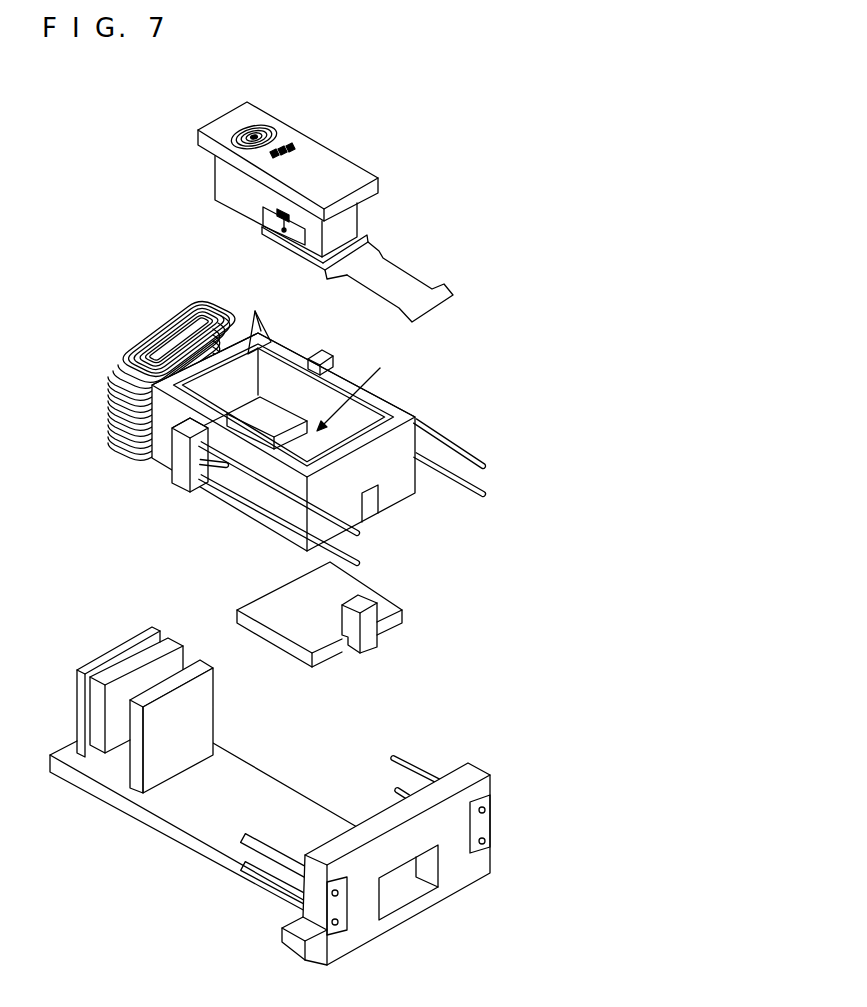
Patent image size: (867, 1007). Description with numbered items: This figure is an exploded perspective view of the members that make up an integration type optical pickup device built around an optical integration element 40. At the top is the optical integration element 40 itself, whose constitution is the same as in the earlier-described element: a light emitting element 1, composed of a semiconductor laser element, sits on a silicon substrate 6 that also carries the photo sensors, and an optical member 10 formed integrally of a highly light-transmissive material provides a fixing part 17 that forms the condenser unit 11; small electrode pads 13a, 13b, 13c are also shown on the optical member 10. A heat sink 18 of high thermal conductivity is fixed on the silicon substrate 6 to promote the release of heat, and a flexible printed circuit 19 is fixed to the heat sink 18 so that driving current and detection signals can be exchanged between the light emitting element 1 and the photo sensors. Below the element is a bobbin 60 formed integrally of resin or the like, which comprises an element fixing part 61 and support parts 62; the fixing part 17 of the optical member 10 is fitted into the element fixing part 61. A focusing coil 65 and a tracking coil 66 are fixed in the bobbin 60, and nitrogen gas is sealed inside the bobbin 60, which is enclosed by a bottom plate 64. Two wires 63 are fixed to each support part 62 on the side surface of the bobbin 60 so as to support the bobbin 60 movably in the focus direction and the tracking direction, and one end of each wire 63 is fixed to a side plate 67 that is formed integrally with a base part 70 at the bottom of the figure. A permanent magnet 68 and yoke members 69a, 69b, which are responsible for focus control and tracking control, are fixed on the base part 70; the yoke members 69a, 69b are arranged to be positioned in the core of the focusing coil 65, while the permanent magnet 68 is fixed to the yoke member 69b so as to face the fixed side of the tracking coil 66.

The light emitting element 1 is at (277, 218).
The silicon substrate 6 is at (282, 233).
The optical member 10 is at (212, 223).
The condenser unit 11 is at (258, 123).
The electrode pad 13a is at (283, 148).
The electrode pad 13b is at (282, 150).
The electrode pad 13c is at (290, 147).
The fixing part 17 is at (202, 141).
The heat sink 18 is at (291, 262).
The flexible printed circuit 19 is at (395, 282).
The optical integration element 40 is at (425, 220).
The bobbin 60 is at (407, 491).
The element fixing part 61 is at (257, 320).
The support part 62 is at (325, 352).
The wires 63 is at (356, 670).
The bottom plate 64 is at (278, 610).
The focusing coil 65 is at (118, 440).
The tracking coil 66 is at (178, 331).
The side plate 67 is at (368, 925).
The permanent magnet 68 is at (115, 735).
The yoke member 69a is at (203, 723).
The yoke member 69b is at (108, 650).
The base part 70 is at (273, 787).